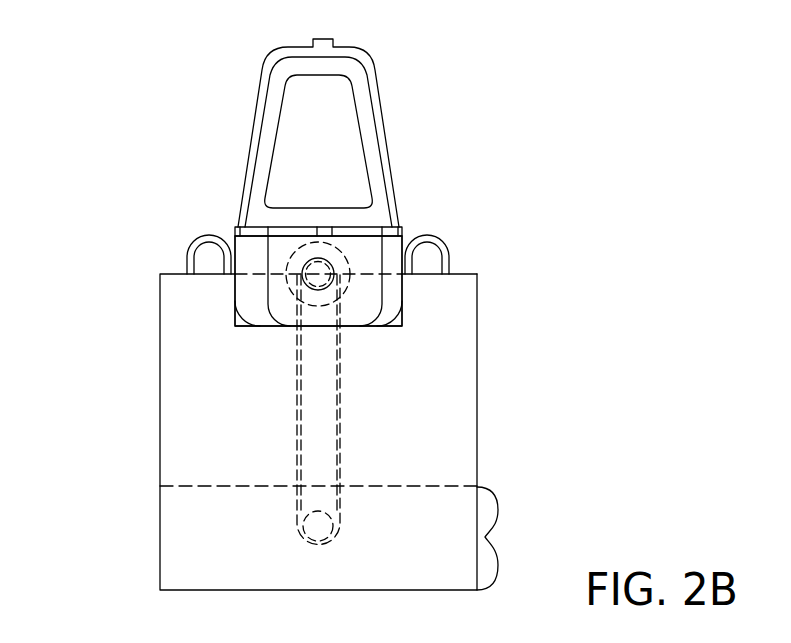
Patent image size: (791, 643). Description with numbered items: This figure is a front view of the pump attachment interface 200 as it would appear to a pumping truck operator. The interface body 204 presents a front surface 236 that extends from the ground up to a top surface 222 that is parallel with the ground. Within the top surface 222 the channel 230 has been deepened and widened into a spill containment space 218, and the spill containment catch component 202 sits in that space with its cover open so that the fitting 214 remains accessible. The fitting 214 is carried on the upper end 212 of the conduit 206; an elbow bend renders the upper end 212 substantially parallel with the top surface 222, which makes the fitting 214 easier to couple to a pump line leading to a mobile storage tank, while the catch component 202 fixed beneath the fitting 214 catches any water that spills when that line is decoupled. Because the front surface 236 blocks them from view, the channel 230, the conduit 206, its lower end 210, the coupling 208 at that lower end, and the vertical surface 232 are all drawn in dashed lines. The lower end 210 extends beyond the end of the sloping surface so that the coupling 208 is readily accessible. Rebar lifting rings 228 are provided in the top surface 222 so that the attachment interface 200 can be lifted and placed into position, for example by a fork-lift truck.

The pump attachment interface 200 is at (100, 92).
The spill containment catch component 202 is at (405, 148).
The interface body 204 is at (160, 462).
The conduit 206 is at (313, 473).
The coupling 208 is at (318, 545).
The lower end 210 is at (283, 521).
The upper end 212 is at (358, 313).
The fitting 214 is at (295, 252).
The spill containment space 218 is at (403, 320).
The top surface 222 is at (468, 273).
The rebar lifting rings 228 is at (187, 256).
The channel 230 is at (297, 375).
The vertical surface 232 is at (487, 537).
The front surface 236 is at (403, 394).